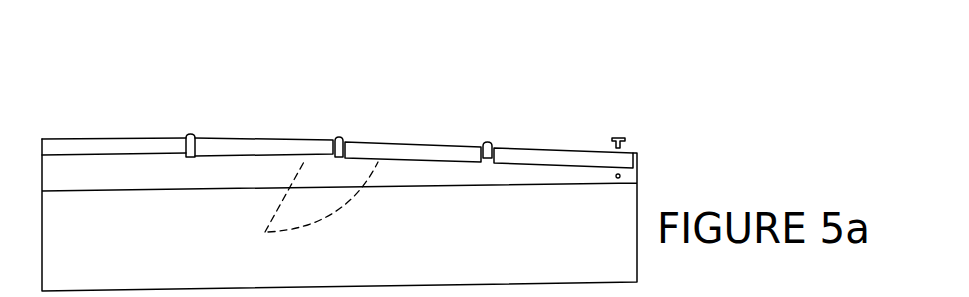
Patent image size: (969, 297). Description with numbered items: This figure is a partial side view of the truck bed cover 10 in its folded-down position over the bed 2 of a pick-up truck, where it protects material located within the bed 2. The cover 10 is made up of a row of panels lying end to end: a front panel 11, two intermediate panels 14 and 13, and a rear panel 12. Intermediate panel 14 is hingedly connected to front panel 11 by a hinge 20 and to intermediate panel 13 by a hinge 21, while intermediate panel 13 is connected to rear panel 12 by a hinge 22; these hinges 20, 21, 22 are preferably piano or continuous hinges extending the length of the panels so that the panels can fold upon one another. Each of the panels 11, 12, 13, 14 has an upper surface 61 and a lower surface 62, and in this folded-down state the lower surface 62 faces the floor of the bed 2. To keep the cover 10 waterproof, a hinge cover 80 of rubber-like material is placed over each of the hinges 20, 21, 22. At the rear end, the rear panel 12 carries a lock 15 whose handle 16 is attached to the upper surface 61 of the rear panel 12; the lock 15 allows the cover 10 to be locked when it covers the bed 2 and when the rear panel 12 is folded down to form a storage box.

The cover 10 is at (614, 61).
The bed 2 is at (395, 250).
The front panel 11 is at (112, 137).
The rear panel 12 is at (563, 128).
The intermediate panel 13 is at (412, 141).
The intermediate panel 14 is at (262, 138).
The lock 15 is at (680, 109).
The handle 16 is at (619, 134).
The hinge 20 is at (196, 104).
The hinge 21 is at (338, 102).
The hinge 22 is at (490, 98).
The upper surface 61 is at (337, 104).
The lower surface 62 is at (268, 224).
The hinge cover 80 is at (309, 89).